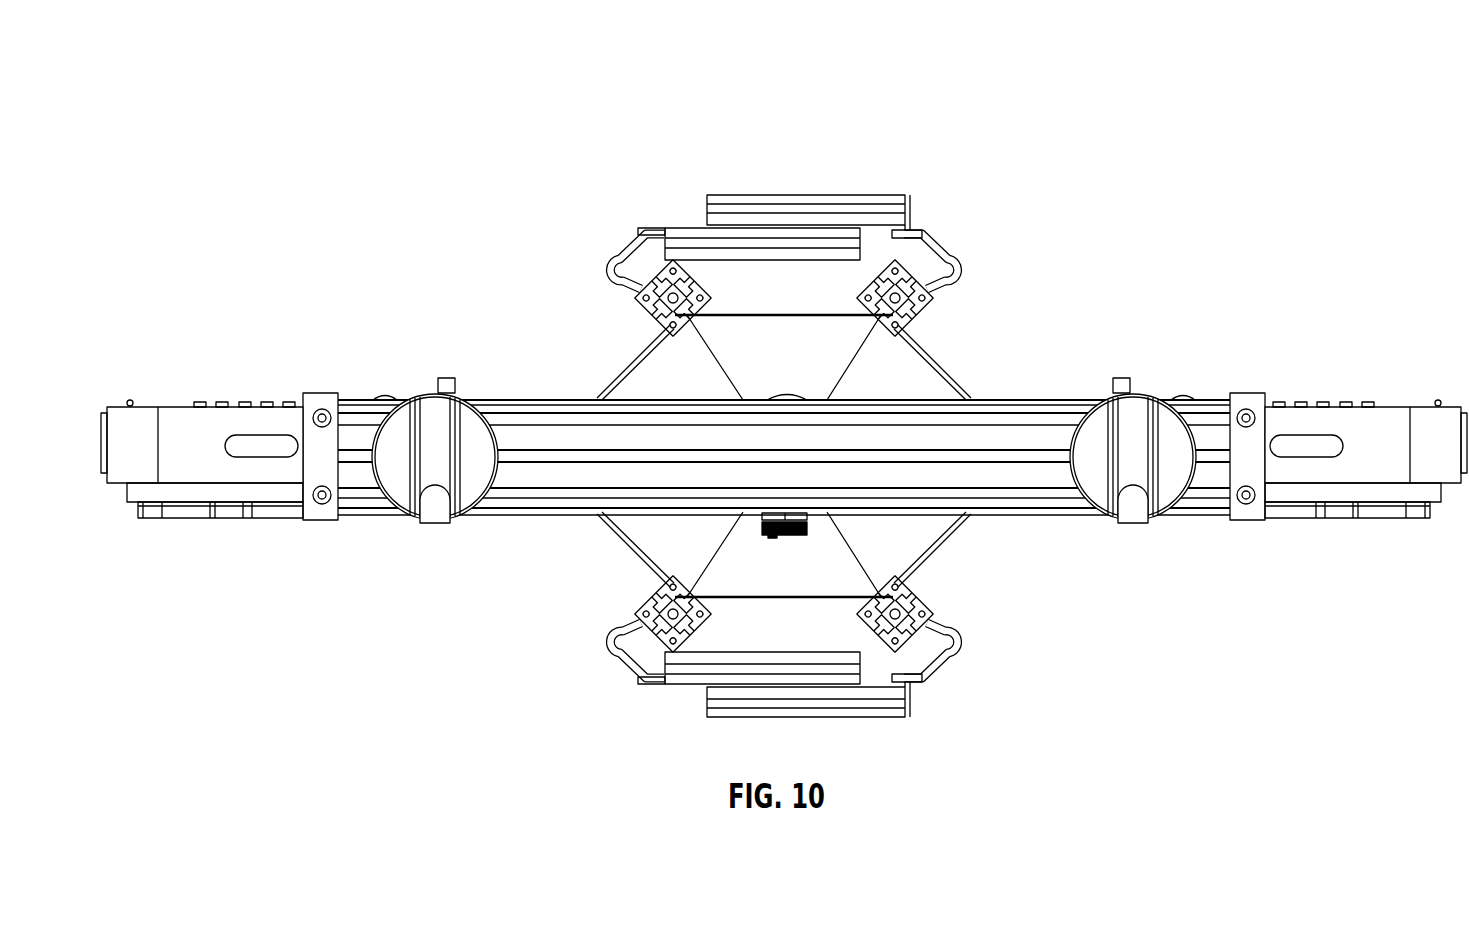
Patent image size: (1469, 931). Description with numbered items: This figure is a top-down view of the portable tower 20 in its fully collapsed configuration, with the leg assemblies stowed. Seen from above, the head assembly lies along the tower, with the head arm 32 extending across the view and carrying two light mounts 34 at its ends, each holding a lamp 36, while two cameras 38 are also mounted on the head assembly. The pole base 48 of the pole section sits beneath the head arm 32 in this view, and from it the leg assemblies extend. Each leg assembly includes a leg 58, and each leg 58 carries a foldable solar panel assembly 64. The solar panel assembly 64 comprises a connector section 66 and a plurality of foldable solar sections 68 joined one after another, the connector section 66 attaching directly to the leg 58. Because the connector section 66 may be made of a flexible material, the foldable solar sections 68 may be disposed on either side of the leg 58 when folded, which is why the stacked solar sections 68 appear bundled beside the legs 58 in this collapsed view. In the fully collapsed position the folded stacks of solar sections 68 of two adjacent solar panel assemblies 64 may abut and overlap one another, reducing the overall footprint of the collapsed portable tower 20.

The portable tower 20 is at (414, 95).
The head arm 32 is at (1055, 518).
The light mount 34 is at (188, 425).
The lamp 36 is at (228, 518).
The camera 38 is at (398, 488).
The pole base 48 is at (938, 550).
The leg 58 is at (650, 315).
The foldable solar panel assembly 64 is at (798, 195).
The connector section 66 is at (596, 267).
The foldable solar section 68 is at (915, 215).